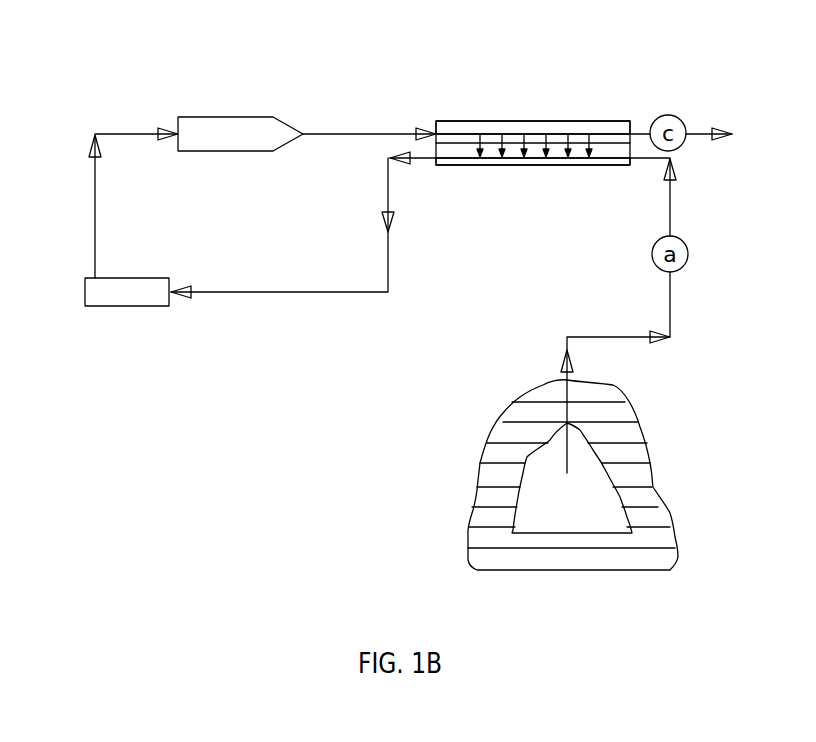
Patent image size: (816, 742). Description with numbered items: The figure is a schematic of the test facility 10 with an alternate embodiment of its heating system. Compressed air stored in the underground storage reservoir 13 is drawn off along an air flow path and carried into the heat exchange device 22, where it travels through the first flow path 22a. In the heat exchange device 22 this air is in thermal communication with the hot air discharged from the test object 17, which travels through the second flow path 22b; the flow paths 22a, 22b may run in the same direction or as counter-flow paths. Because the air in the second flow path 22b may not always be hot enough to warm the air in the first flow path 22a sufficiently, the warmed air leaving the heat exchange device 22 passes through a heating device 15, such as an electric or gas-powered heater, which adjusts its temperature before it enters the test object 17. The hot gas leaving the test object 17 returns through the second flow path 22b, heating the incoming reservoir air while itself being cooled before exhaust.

The test facility 10 is at (98, 50).
The storage reservoir 13 is at (535, 502).
The heating device 15 is at (580, 121).
The test object 17 is at (193, 123).
The heat exchange device 22 is at (532, 139).
The first flow path 22a is at (471, 160).
The second flow path 22b is at (450, 133).